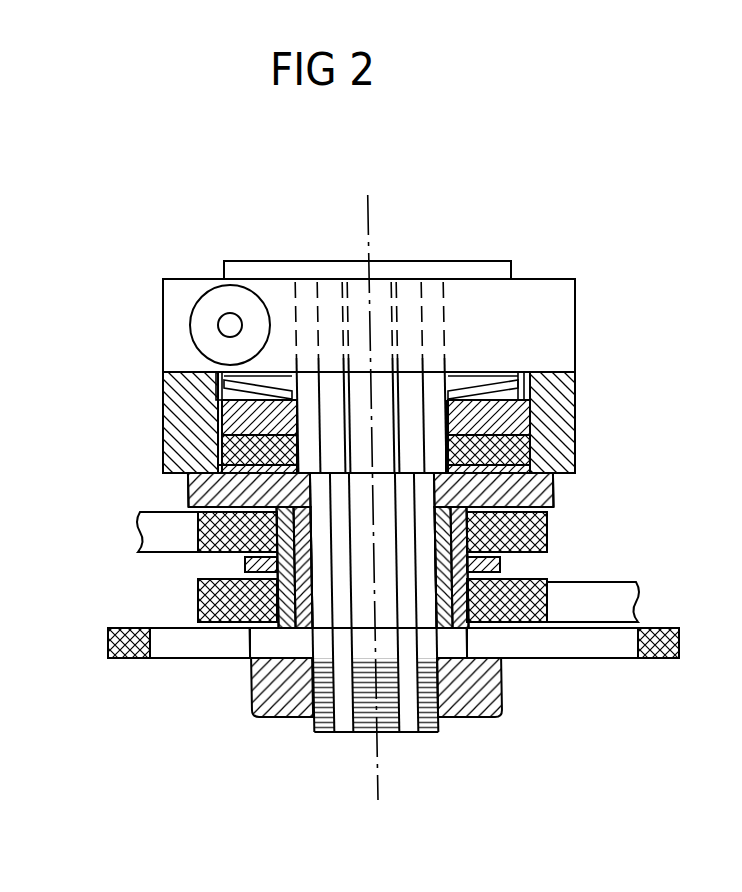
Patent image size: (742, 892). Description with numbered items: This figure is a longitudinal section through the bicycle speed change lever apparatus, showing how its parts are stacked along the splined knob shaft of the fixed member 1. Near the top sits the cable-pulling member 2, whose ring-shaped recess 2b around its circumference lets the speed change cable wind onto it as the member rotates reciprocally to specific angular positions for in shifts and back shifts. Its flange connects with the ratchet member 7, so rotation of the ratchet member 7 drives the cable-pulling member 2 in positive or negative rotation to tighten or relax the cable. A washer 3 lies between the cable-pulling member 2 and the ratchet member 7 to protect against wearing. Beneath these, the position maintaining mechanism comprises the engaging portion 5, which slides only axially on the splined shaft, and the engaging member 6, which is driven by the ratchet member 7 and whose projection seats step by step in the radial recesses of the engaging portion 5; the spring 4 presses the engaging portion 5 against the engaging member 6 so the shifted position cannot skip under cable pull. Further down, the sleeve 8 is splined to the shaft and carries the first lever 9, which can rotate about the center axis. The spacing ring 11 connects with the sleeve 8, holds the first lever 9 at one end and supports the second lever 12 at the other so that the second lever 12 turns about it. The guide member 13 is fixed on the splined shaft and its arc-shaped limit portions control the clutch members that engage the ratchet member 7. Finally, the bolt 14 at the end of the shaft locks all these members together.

The fixed member 1 is at (477, 267).
The cable-pulling member 2 is at (543, 293).
The ring-shaped recess 2b is at (212, 298).
The washer 3 is at (505, 375).
The spring 4 is at (527, 400).
The engaging portion 5 is at (220, 418).
The engaging member 6 is at (220, 452).
The ratchet member 7 is at (570, 395).
The sleeve 8 is at (547, 487).
The first lever 9 is at (137, 540).
The spacing ring 11 is at (500, 562).
The second lever 12 is at (633, 598).
The guide member 13 is at (628, 657).
The bolt 14 is at (500, 692).